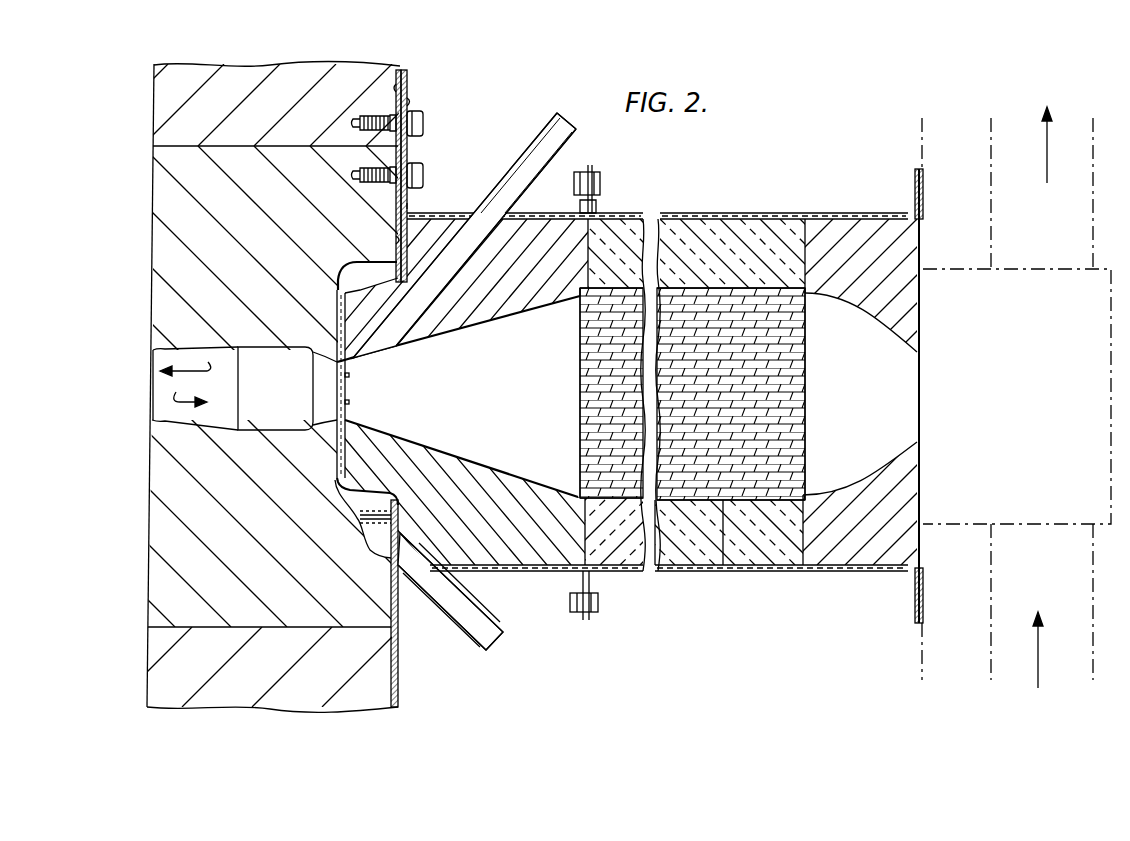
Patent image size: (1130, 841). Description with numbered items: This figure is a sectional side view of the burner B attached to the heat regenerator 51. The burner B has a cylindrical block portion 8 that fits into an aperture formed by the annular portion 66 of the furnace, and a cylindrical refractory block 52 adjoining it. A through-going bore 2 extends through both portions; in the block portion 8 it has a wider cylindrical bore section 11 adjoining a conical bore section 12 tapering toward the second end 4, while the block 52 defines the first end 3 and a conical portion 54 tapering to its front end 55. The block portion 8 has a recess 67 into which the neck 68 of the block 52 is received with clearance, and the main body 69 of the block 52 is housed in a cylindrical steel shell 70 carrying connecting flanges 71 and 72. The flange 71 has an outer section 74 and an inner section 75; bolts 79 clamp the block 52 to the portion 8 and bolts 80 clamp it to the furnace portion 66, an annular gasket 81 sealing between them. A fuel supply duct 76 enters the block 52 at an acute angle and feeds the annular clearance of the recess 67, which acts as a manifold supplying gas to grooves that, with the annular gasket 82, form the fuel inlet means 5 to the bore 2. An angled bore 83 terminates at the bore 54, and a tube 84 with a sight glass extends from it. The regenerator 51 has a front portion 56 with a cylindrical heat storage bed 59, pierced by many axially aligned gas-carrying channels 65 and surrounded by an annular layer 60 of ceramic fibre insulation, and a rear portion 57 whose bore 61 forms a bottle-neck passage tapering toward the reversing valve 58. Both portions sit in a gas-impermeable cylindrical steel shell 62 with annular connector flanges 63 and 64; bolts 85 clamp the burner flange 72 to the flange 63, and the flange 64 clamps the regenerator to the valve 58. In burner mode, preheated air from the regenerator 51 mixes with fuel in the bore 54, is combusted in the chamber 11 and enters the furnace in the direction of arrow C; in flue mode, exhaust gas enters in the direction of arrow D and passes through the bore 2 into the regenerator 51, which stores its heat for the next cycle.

The through-going bore 2 is at (343, 404).
The first end 3 is at (636, 218).
The second end 4 is at (171, 402).
The fuel inlet means 5 is at (337, 463).
The cylindrical block portion 8 is at (283, 266).
The cylindrical bore section 11 is at (266, 402).
The conical bore section 12 is at (206, 396).
The heat regenerator 51 is at (675, 565).
The cylindrical refractory block 52 is at (485, 555).
The conical portion 54 is at (488, 406).
The front end 55 is at (352, 428).
The front portion 56 is at (778, 560).
The rear portion 57 is at (862, 560).
The reversing valve 58 is at (998, 413).
The heat storage bed 59 is at (712, 290).
The annular layer of ceramic fibre insulation material 60 is at (703, 237).
The bore 61 is at (842, 412).
The cylindrical steel shell 62 is at (676, 219).
The annular connector flange 63 is at (594, 170).
The annular connector flange 64 is at (912, 177).
The gas-carrying channels 65 is at (768, 293).
The annular portion 66 is at (408, 79).
The recess 67 is at (350, 265).
The neck 68 is at (340, 292).
The cylindrical main body portion 69 is at (545, 555).
The cylindrical steel shell 70 is at (563, 213).
The connecting flange 71 is at (408, 150).
The connecting flange 72 is at (597, 203).
The outer section 74 is at (396, 86).
The inner section 75 is at (397, 240).
The fuel supply duct 76 is at (480, 638).
The bolts 79 is at (424, 176).
The bolts 80 is at (424, 128).
The annular gasket 81 is at (408, 102).
The annular gasket 82 is at (340, 353).
The bore 83 is at (428, 307).
The tube 84 is at (552, 118).
The bolts 85 is at (602, 182).
The burner B is at (408, 205).
The arrow C is at (185, 380).
The arrow D is at (201, 408).